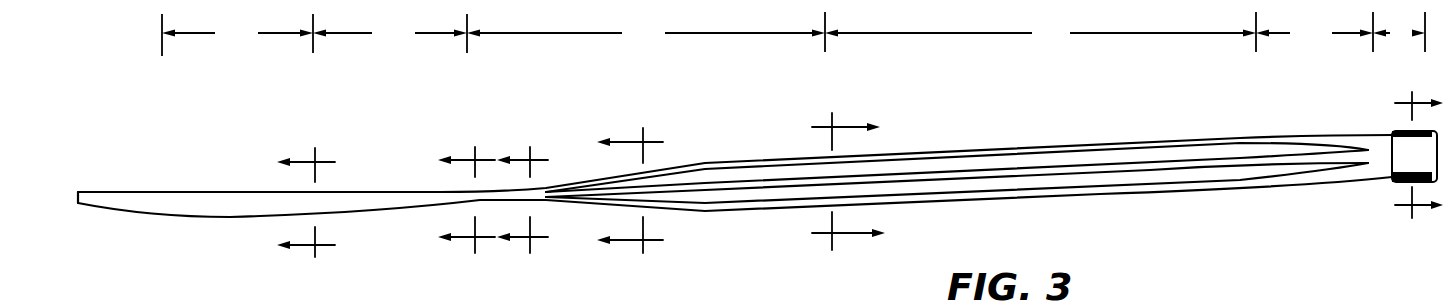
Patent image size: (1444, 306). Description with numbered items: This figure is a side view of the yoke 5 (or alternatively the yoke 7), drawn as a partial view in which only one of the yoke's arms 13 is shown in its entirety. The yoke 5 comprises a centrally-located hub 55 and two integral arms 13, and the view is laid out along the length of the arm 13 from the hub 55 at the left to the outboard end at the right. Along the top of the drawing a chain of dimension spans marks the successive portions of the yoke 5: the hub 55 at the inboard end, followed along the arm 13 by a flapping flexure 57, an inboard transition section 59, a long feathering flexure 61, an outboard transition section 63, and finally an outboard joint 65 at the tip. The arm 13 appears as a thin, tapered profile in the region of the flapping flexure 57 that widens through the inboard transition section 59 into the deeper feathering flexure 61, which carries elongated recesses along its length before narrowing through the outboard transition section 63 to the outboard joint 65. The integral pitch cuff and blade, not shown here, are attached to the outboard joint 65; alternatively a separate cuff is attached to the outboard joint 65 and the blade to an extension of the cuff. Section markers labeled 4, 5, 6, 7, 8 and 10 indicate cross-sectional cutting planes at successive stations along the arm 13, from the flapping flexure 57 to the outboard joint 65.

The section line 4- 4 is at (308, 205).
The yoke 5 is at (170, 253).
The section line 6- 6 is at (524, 197).
The yoke 7 is at (631, 190).
The section line 8- 8 is at (846, 180).
The section line 10- 10 is at (1412, 157).
The arm 13 is at (1075, 136).
The hub 55 is at (528, 160).
The flapping flexure 57 is at (390, 33).
The inboard transition section 59 is at (646, 33).
The feathering flexure 61 is at (1040, 32).
The outboard transition section 63 is at (1314, 32).
The outboard joint 65 is at (1399, 32).